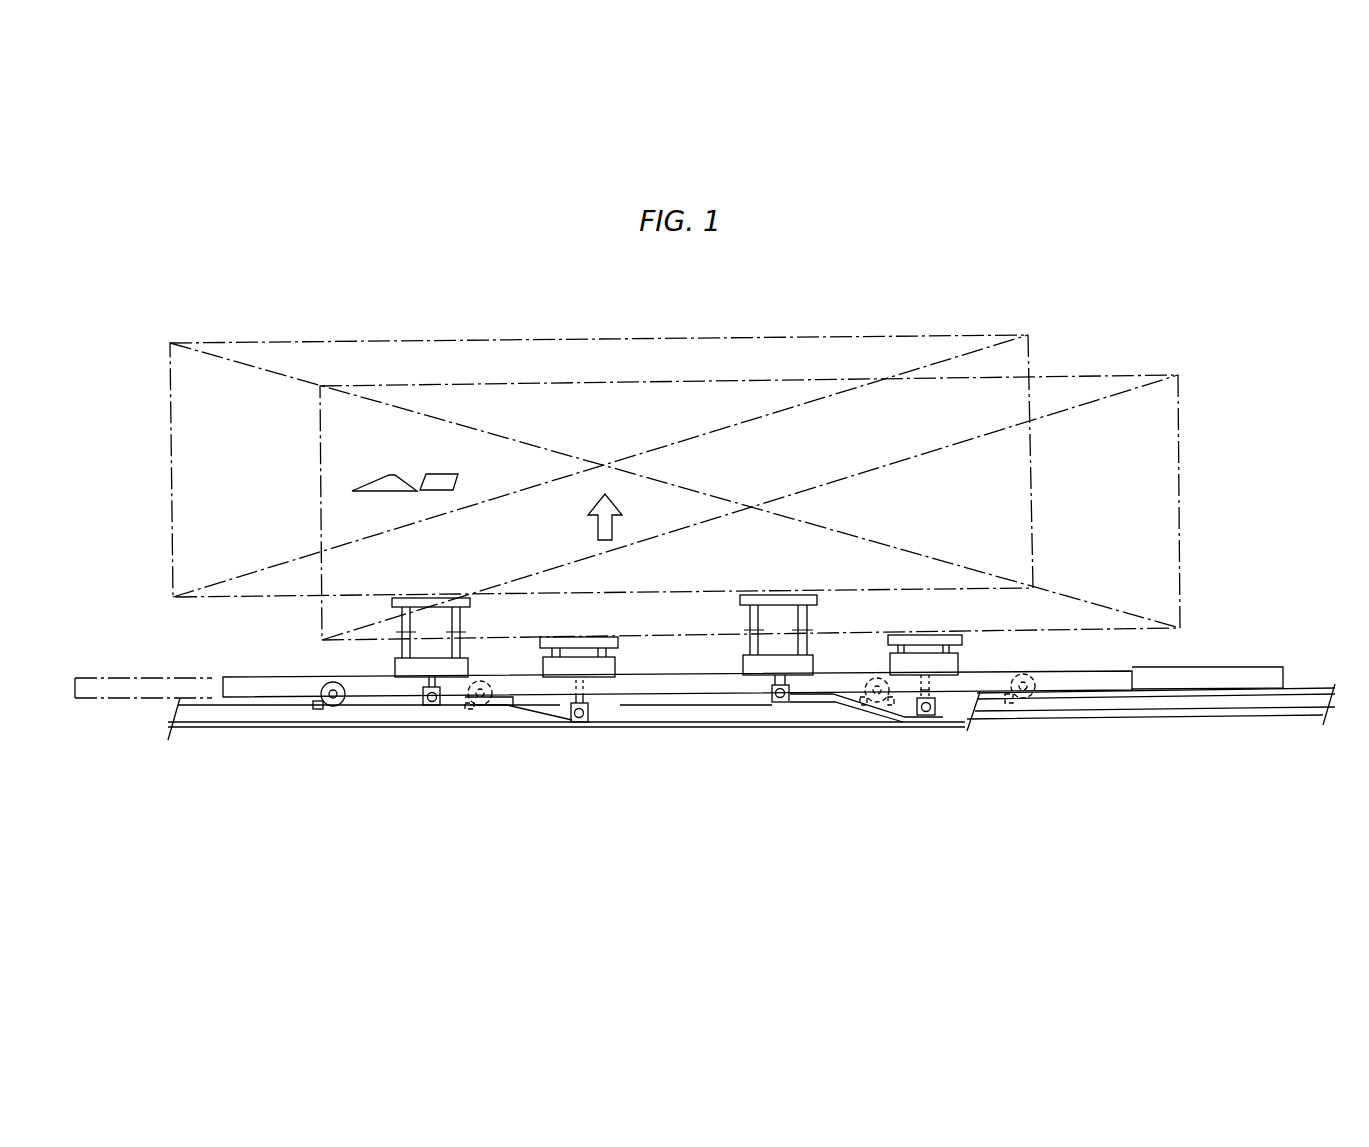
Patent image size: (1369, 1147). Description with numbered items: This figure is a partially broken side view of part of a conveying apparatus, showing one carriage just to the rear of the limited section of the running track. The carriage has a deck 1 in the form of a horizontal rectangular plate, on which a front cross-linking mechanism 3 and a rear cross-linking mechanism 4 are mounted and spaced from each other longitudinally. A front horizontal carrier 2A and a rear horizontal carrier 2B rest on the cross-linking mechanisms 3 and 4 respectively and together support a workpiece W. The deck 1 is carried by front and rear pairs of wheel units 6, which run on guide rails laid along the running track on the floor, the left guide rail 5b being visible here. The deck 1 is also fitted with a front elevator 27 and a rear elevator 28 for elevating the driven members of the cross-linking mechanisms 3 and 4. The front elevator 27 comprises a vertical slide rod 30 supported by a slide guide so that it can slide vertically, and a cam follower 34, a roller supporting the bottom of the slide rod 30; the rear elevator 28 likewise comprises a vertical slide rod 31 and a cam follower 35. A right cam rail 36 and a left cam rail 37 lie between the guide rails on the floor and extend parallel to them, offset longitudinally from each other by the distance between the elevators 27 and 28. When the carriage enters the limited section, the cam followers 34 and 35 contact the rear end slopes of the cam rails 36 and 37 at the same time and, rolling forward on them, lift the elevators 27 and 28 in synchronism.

The workpiece W is at (1045, 398).
The deck 1 is at (113, 678).
The front horizontal carrier 2A is at (460, 651).
The rear horizontal carrier 2B is at (857, 582).
The front cross-linking mechanism 3 is at (393, 619).
The rear cross-linking mechanism 4 is at (743, 617).
The left guide rail 5b is at (255, 712).
The wheel unit 6 is at (327, 682).
The front elevator 27 is at (408, 688).
The rear elevator 28 is at (800, 683).
The vertical slide rod 30 is at (583, 640).
The vertical slide rod 31 is at (926, 690).
The cam follower 34 is at (433, 707).
The cam follower 35 is at (777, 702).
The right cam rail 36 is at (513, 705).
The left cam rail 37 is at (793, 713).